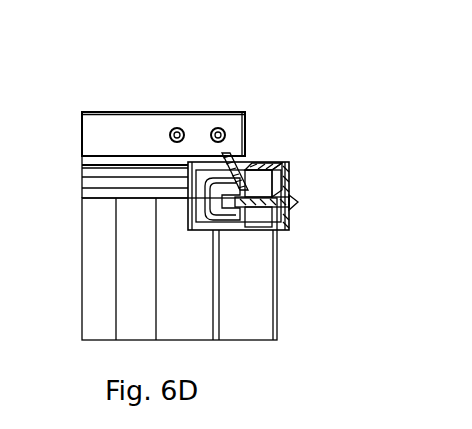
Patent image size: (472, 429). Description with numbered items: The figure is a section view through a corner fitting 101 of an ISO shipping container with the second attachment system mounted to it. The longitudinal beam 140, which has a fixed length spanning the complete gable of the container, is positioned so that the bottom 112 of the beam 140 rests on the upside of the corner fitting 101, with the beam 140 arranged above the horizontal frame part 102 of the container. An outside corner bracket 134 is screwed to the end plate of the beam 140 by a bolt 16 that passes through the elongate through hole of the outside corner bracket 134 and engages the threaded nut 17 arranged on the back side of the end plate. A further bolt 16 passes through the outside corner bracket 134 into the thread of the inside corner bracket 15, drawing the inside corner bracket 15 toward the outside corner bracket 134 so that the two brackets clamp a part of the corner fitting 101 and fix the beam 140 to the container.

The longitudinal beam 140 is at (118, 125).
The bottom of the beam 112 is at (86, 150).
The horizontal frame part 102 is at (253, 312).
The outside corner bracket 134 is at (283, 168).
The inside corner bracket 15 is at (230, 162).
The corner fitting 101 is at (257, 163).
The bolt 16 is at (272, 207).
The threaded nut 17 is at (232, 200).